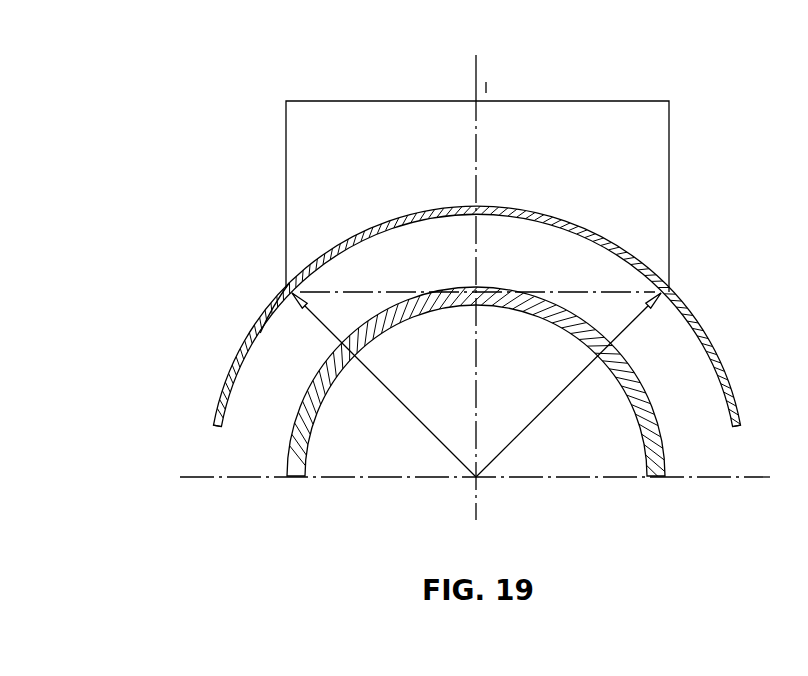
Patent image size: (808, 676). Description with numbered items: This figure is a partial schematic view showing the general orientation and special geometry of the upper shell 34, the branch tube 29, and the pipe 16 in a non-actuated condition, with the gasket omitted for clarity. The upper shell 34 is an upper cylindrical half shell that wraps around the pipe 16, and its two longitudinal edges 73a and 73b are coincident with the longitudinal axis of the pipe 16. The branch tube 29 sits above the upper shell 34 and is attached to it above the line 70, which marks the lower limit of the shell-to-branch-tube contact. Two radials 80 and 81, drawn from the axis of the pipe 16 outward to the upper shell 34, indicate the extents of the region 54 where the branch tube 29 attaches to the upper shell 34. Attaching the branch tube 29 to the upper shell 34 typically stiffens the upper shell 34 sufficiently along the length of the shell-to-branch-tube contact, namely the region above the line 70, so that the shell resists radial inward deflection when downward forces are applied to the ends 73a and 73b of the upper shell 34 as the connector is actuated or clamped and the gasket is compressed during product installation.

The branch tube 29 is at (670, 182).
The upper shell 34 is at (709, 333).
The region 54 is at (263, 283).
The edge of top shell 73a is at (210, 432).
The edge of top shell 73b is at (743, 432).
The pipe 16 is at (665, 437).
The line 70 is at (352, 293).
The radial 80 is at (379, 381).
The radial 81 is at (575, 381).